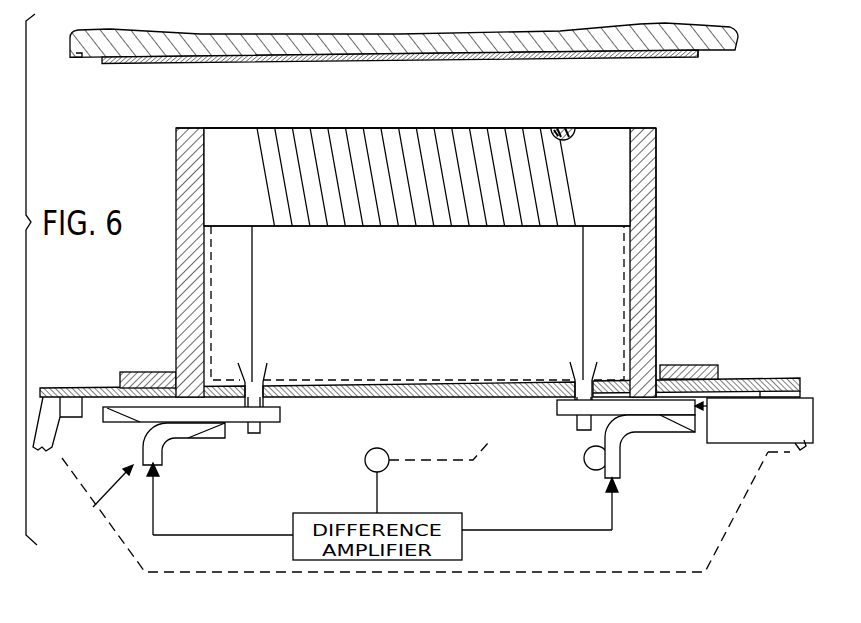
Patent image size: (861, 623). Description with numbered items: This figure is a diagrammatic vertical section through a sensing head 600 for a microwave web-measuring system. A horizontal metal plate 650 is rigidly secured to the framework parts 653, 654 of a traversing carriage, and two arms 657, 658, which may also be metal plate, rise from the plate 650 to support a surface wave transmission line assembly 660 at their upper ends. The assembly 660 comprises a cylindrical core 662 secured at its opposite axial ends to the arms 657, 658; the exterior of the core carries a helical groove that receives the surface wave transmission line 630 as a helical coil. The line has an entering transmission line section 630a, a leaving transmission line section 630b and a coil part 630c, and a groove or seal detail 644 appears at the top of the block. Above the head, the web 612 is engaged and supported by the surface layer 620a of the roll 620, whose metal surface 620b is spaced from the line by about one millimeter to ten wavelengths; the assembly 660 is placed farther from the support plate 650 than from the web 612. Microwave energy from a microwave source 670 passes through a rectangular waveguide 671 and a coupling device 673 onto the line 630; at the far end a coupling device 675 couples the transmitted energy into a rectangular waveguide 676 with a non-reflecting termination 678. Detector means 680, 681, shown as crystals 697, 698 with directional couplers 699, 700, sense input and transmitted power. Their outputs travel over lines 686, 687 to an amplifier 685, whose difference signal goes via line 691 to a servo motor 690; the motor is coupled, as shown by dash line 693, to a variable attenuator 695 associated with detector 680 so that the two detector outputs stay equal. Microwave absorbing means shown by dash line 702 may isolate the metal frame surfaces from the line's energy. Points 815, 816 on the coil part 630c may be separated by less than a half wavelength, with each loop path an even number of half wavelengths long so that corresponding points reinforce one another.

The plasma processing apparatus 600 is at (449, 124).
The web 612 is at (693, 60).
The roll 620 is at (722, 42).
The surface layer of the roll 620a is at (80, 62).
The metal surface of roller 620b is at (100, 65).
The surface wave transmission line 630 is at (417, 155).
The entering transmission line section 630a is at (582, 291).
The leaving transmission line section 630b is at (254, 318).
The coil part 630c is at (372, 162).
The seal ring 644 is at (570, 126).
The horizontal metal plate 650 is at (62, 388).
The framework part 653 is at (62, 450).
The framework part 654 is at (800, 452).
The arm 657 is at (186, 277).
The arm 658 is at (657, 216).
The surface wave transmission line assembly 660 is at (378, 227).
The cylindrical core 662 is at (617, 160).
The microwave source 670 is at (738, 444).
The rectangular waveguide 671 is at (706, 372).
The coupling device 673 is at (570, 369).
The coupling device 675 is at (270, 374).
The rectangular waveguide 676 is at (240, 424).
The non-reflecting termination 678 is at (115, 423).
The detector means 680 is at (626, 479).
The detector means 681 is at (100, 497).
The amplifier 685 is at (354, 573).
The line 686 is at (518, 531).
The line 687 is at (213, 536).
The servo motor 690 is at (365, 460).
The line 691 is at (378, 488).
The dash line coupling 693 is at (486, 457).
The variable attenuator 695 is at (586, 452).
The crystal 697 is at (606, 488).
The crystal 698 is at (158, 472).
The directional coupler 699 is at (658, 428).
The directional coupler 700 is at (188, 440).
The microwave absorbing means 702 is at (214, 291).
The point on coil 815 is at (488, 128).
The point on coil 816 is at (470, 128).